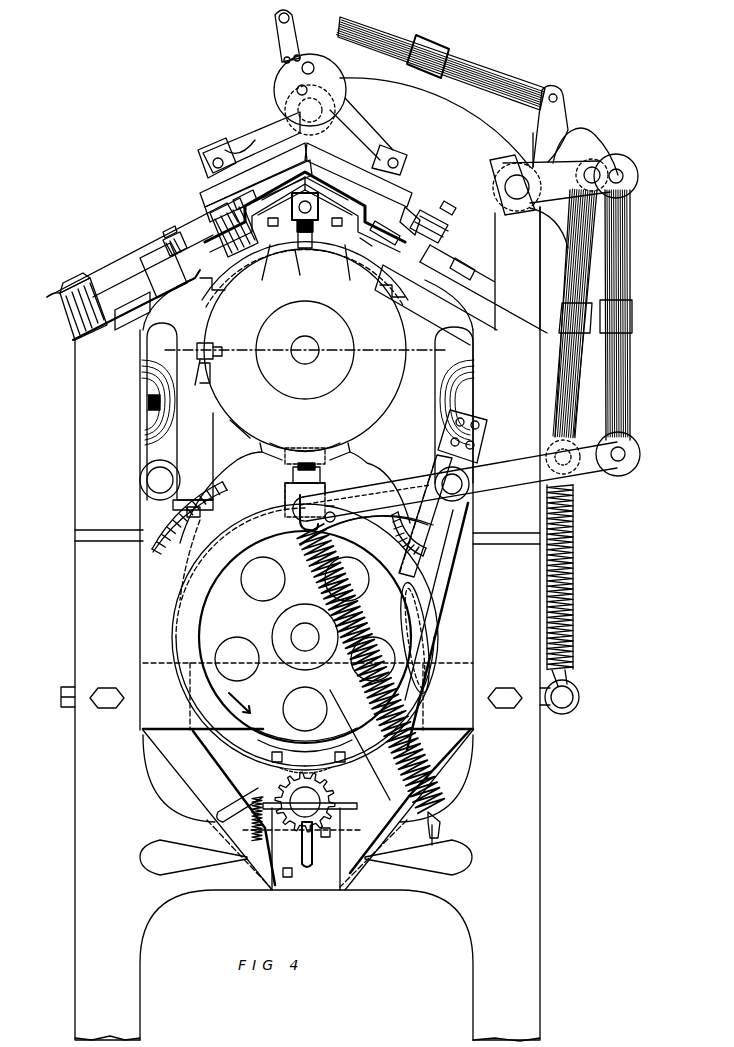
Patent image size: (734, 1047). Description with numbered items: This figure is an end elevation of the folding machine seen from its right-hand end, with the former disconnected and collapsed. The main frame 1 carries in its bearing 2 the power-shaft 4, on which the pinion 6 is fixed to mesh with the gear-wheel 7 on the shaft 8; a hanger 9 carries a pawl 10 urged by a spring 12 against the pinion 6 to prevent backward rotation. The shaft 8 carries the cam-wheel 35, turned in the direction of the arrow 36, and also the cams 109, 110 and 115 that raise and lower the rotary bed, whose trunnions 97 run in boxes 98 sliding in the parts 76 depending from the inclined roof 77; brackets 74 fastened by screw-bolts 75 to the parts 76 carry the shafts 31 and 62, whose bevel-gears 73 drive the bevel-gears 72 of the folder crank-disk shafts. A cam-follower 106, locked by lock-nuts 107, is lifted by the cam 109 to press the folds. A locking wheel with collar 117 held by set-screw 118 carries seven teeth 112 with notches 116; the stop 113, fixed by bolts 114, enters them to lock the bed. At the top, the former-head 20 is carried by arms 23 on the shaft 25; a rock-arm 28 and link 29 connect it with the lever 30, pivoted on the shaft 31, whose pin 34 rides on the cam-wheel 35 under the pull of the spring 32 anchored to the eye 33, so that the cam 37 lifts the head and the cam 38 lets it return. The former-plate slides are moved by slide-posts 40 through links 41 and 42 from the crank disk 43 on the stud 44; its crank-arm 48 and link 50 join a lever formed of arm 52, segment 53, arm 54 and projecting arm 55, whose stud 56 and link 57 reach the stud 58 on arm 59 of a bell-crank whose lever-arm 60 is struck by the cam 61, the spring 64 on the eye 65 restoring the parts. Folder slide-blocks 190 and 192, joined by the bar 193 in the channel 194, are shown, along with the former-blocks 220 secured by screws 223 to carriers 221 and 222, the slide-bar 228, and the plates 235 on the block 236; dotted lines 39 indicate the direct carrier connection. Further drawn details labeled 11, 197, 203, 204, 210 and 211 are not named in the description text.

The main frame 1 is at (78, 765).
The bearing 2 is at (290, 815).
The power-shaft 4 is at (305, 827).
The pinion 6 is at (330, 790).
The gear-wheel 7 is at (200, 350).
The shaft 8 is at (305, 637).
The hanger 9 is at (308, 809).
The pawl 10 is at (240, 805).
The drive wheel 11 is at (305, 637).
The spring 12 is at (247, 819).
The former-head 20 is at (200, 190).
The arms 23 is at (435, 122).
The shaft 25 is at (517, 200).
The rock-arm 28 is at (550, 185).
The link 29 is at (634, 240).
The lever 30 is at (590, 470).
The shaft 31 is at (462, 492).
The spring 32 is at (352, 614).
The eye 33 is at (442, 834).
The pin 34 is at (334, 512).
The cam-wheel 35 is at (178, 638).
The arrow 36 is at (240, 698).
The cam 37 is at (378, 740).
The cam 38 is at (298, 502).
The dotted lines 39 is at (422, 192).
The slide-posts 40 is at (200, 157).
The link 41 is at (372, 142).
The link 42 is at (238, 142).
The crank disk 43 is at (272, 70).
The stud 44 is at (297, 90).
The crank-arm 48 is at (274, 25).
The link 50 is at (470, 62).
The arm 52 is at (534, 160).
The segment 53 is at (588, 145).
The arm 54 is at (562, 108).
The projecting arm 55 is at (565, 222).
The stud 56 is at (600, 170).
The link 57 is at (570, 272).
The stud 58 is at (568, 452).
The arm 59 is at (500, 435).
The lever-arm 60 is at (445, 585).
The cam 61 is at (350, 745).
The shaft 62 is at (168, 478).
The spring 64 is at (578, 570).
The eye 65 is at (576, 697).
The bevel-gear 72 is at (142, 420).
The bevel-gears 73 is at (148, 530).
The brackets 74 is at (190, 518).
The screw-bolts 75 is at (185, 550).
The parts 76 is at (310, 411).
The inclined roof 77 is at (272, 274).
The trunnions 97 is at (305, 346).
The boxes 98 is at (295, 493).
The cam-follower 106 is at (322, 480).
The lock-nuts 107 is at (318, 450).
The cam 109 is at (440, 610).
The cams 110 is at (178, 622).
The teeth 112 is at (210, 383).
The stop 113 is at (310, 248).
The bolts 114 is at (275, 228).
The cams 115 is at (185, 570).
The notch 116 is at (300, 250).
The collar 117 is at (267, 425).
The set-screw 118 is at (230, 343).
The block 190 is at (485, 297).
The slide-block 192 is at (127, 320).
The bar 193 is at (150, 265).
The channel 194 is at (130, 278).
The solenoid 197 is at (172, 232).
The solenoid 203 is at (445, 240).
The terminal 204 is at (420, 235).
The coil 210 is at (62, 288).
The coil end 211 is at (70, 300).
The former-blocks 220 is at (309, 272).
The carriers 221 is at (391, 228).
The carriers 222 is at (208, 212).
The screws 223 is at (379, 241).
The slide-bar 228 is at (238, 192).
The plates 235 is at (268, 195).
The block 236 is at (308, 172).